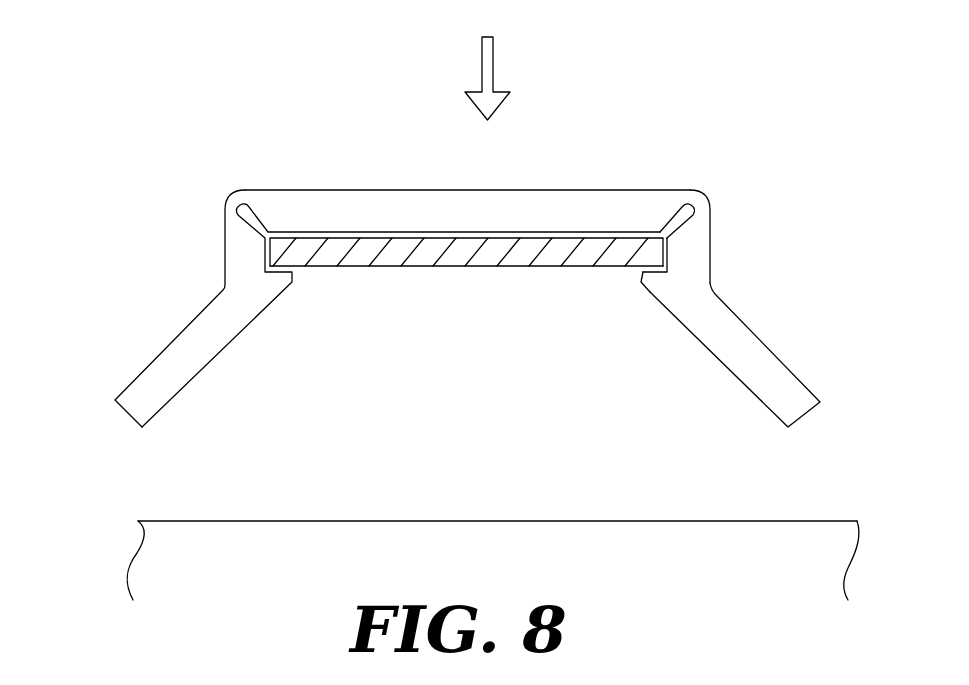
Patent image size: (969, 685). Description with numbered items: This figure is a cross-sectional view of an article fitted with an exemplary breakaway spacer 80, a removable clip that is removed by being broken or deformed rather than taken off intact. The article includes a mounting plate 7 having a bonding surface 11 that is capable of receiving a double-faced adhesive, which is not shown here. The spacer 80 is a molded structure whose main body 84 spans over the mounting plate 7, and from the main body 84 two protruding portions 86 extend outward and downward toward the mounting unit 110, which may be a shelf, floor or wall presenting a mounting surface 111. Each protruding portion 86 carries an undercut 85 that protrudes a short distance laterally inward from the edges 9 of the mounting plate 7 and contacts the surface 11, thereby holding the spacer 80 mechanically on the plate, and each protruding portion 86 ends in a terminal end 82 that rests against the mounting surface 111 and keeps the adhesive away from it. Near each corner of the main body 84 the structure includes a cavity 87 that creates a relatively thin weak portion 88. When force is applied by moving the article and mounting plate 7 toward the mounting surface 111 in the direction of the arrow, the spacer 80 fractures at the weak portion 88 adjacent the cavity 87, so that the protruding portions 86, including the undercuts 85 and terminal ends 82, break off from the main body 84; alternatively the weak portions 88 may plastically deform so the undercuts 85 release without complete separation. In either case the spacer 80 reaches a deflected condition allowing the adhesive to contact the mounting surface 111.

The mounting plate 7 is at (466, 291).
The edges of mounting plate 9 is at (668, 250).
The bonding surface 11 is at (400, 267).
The breakaway spacer 80 is at (467, 296).
The terminal ends 82 is at (142, 427).
The main body 84 is at (415, 210).
The undercuts 85 is at (648, 290).
The protruding portions 86 is at (763, 357).
The cavity 87 is at (688, 218).
The weak portion 88 is at (702, 200).
The mounting unit 110 is at (447, 515).
The mounting surface 111 is at (292, 520).